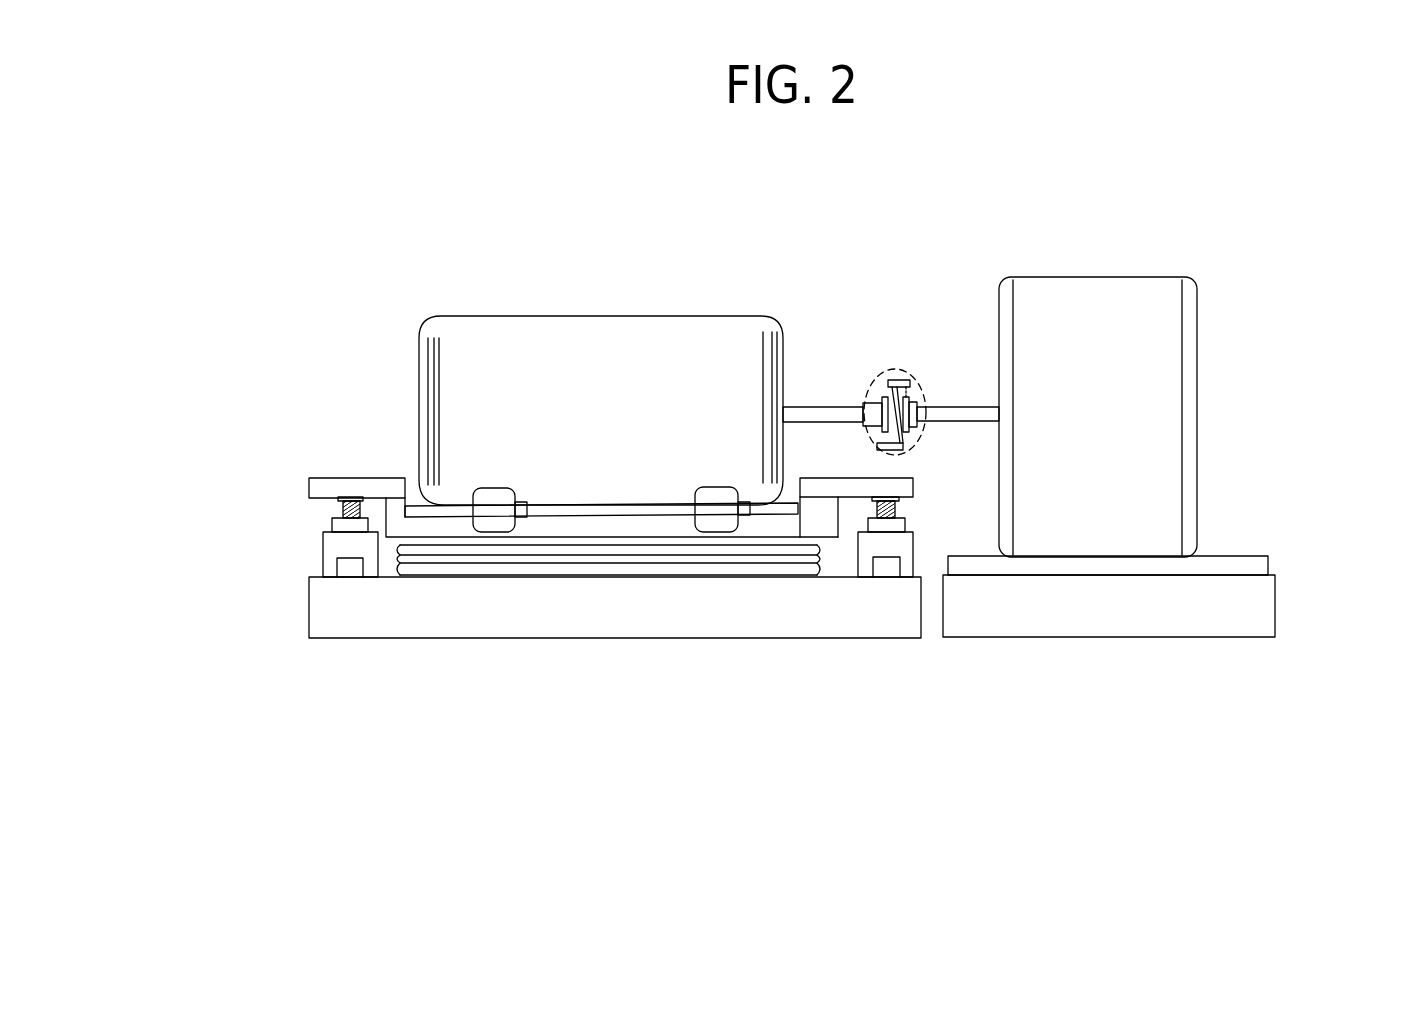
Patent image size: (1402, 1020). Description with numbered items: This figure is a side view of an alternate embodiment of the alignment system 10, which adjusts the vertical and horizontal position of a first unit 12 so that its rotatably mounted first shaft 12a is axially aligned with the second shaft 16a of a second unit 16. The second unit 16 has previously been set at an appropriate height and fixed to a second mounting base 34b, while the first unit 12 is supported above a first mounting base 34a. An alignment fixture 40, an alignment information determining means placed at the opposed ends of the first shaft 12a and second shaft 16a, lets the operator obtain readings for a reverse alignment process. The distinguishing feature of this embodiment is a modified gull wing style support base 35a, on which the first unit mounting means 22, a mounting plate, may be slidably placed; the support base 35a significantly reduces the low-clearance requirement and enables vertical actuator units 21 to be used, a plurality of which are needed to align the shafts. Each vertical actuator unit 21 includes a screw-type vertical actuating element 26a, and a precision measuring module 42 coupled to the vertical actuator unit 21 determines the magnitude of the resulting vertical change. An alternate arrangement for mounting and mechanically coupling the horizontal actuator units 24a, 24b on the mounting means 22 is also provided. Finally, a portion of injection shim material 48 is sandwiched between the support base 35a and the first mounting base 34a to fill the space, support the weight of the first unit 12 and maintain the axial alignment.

The alignment system 10 is at (344, 708).
The first unit 12 is at (423, 408).
The first shaft 12a is at (833, 407).
The second unit 16 is at (1165, 317).
The second shaft 16a is at (945, 407).
The vertical actuator unit 21 is at (338, 548).
The first unit mounting means 22 is at (453, 510).
The horizontal actuator unit 24a is at (500, 518).
The horizontal actuator unit 24b is at (720, 516).
The vertical actuating element 26a is at (340, 508).
The first mounting base 34a is at (383, 640).
The second mounting base 34b is at (1268, 606).
The gull wing support base 35a is at (360, 487).
The alignment fixture 40 is at (892, 352).
The precision measuring module 42 is at (348, 570).
The injection shim material 48 is at (747, 557).